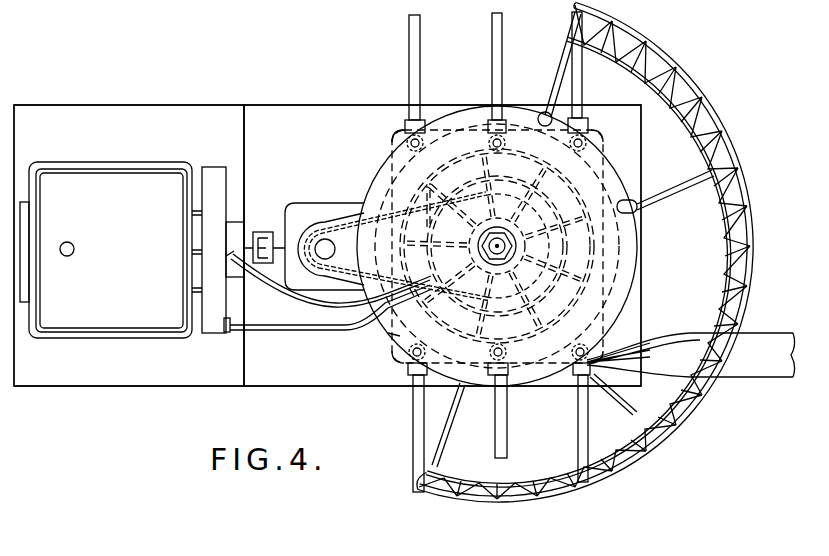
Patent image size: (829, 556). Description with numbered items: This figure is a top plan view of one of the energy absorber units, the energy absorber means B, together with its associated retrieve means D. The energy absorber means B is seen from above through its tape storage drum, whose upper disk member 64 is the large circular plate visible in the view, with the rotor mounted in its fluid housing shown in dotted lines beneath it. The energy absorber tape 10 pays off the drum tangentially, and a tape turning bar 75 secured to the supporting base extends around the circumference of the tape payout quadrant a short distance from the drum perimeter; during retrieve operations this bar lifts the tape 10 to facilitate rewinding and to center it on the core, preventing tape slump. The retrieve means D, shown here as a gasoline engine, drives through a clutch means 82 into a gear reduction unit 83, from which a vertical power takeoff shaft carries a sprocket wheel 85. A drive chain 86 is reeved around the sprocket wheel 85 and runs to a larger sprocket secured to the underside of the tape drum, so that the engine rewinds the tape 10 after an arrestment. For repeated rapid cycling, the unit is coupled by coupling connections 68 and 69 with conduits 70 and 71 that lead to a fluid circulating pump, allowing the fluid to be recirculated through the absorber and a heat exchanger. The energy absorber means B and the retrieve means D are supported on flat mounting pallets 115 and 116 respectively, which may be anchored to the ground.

The energy absorber tape 10 is at (614, 248).
The disk member 64 is at (625, 266).
The coupling connection 68 is at (390, 334).
The coupling connection 69 is at (478, 245).
The conduit 70 is at (278, 333).
The conduit 71 is at (270, 285).
The tape turning bar 75 is at (569, 495).
The clutch means 82 is at (267, 232).
The gear reduction unit 83 is at (330, 210).
The sprocket wheel 85 is at (318, 240).
The drive chain 86 is at (338, 224).
The mounting pallet 115 is at (152, 374).
The mounting pallet 116 is at (386, 376).
The retrieve means D is at (110, 183).
The energy absorber means B is at (378, 152).